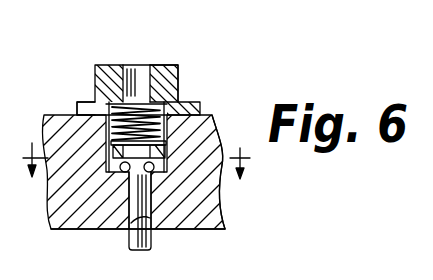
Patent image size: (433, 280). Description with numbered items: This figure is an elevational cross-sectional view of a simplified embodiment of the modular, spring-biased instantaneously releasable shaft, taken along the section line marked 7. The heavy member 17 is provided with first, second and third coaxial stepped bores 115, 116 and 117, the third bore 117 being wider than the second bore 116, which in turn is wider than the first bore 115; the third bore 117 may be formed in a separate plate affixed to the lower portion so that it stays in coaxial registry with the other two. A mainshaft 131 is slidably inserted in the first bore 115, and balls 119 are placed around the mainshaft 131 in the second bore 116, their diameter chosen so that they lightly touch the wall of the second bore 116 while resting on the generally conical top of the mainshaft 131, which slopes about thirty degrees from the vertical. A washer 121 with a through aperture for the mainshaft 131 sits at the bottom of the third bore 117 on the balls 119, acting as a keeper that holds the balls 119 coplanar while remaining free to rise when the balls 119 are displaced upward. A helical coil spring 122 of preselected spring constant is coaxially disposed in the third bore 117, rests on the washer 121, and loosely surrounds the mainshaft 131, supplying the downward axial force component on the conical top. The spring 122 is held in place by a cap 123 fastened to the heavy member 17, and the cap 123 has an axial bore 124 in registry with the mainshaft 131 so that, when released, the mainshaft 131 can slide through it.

The section line 7- 7 is at (136, 181).
The heavy member 17 is at (90, 230).
The first bore 115 is at (128, 232).
The second bore 116 is at (159, 173).
The third bore 117 is at (80, 108).
The balls 119 is at (66, 230).
The washer 121 is at (207, 122).
The spring means 122 is at (181, 97).
The cap 123 is at (95, 67).
The axial bore 124 is at (142, 64).
The mainshaft 131 is at (154, 243).